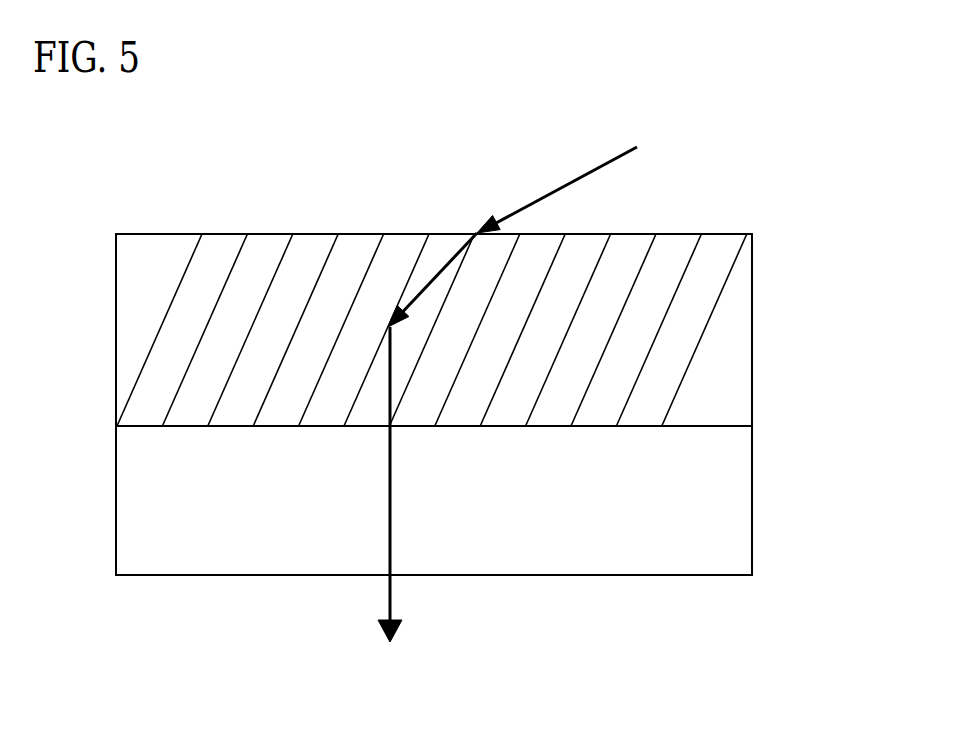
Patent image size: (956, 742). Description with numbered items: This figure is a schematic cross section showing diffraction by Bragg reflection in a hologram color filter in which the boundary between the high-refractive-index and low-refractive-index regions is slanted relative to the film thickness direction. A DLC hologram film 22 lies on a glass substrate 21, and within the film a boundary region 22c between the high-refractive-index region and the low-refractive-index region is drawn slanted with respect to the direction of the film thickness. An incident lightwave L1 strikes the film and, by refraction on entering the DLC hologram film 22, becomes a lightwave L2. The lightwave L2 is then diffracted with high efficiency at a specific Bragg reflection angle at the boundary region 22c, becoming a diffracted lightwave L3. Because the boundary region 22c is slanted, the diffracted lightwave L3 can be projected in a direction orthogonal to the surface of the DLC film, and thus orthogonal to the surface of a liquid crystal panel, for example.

The glass substrate 21 is at (730, 513).
The DLC hologram film 22 is at (760, 232).
The boundary region 22c is at (415, 263).
The incident lightwave L1 is at (560, 186).
The lightwave L2 is at (457, 247).
The diffracted lightwave L3 is at (393, 597).